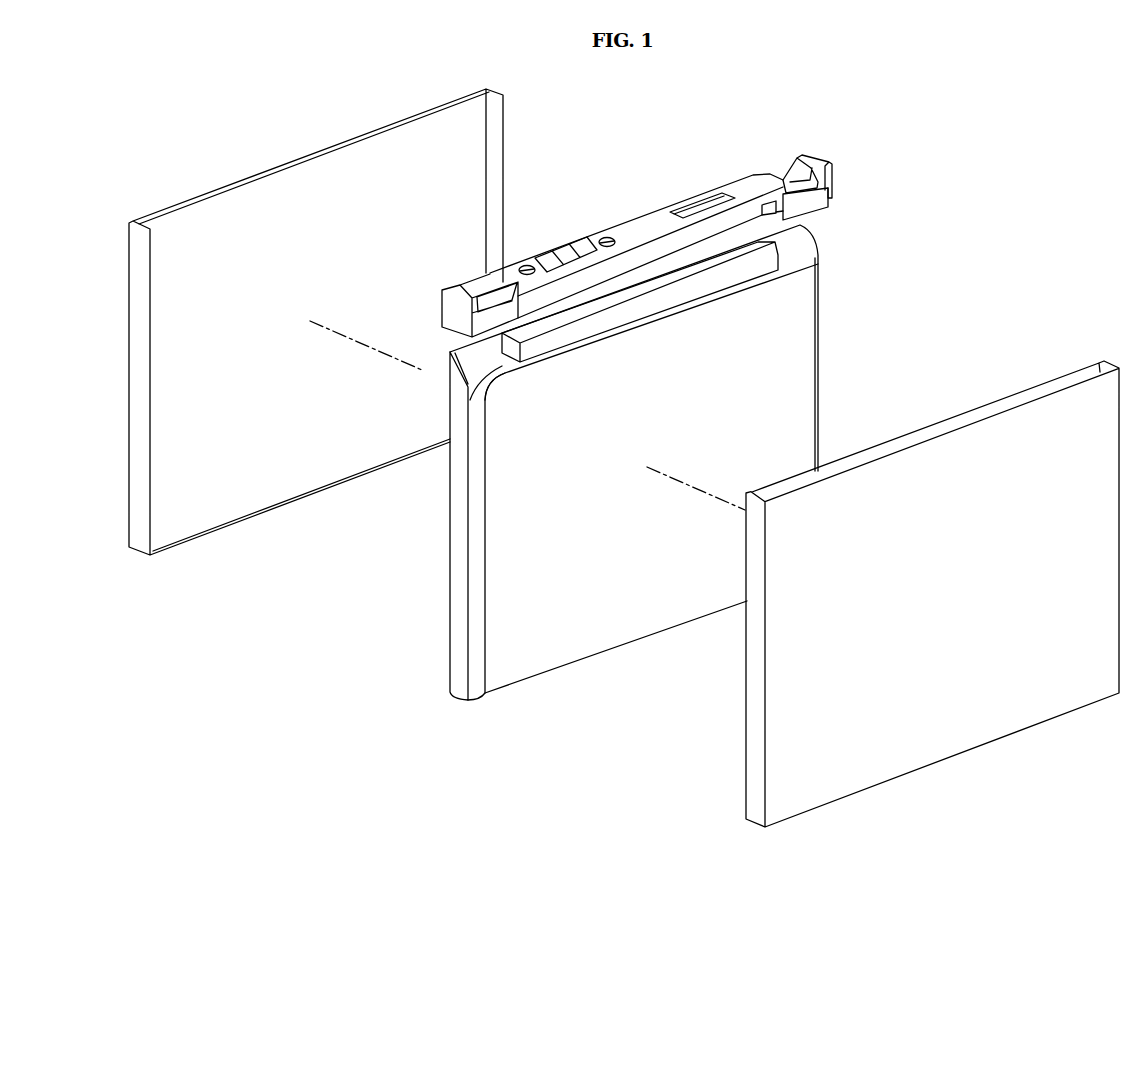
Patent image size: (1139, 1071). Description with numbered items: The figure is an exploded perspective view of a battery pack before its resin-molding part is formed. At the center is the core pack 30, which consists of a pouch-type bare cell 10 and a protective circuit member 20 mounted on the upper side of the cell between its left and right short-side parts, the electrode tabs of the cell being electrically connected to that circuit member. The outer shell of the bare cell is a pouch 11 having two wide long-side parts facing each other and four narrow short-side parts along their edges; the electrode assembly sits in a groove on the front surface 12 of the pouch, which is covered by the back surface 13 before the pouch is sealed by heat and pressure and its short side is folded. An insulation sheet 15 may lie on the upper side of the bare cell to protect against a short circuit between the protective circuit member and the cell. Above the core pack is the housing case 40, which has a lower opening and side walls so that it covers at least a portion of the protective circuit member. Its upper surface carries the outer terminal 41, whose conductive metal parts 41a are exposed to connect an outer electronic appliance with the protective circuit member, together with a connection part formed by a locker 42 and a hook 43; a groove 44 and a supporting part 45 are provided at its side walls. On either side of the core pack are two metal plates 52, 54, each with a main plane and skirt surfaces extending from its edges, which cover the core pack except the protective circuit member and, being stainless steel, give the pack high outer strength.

The pouch-type bare cell 10 is at (588, 462).
The pouch 11 is at (421, 528).
The front surface 12 is at (481, 547).
The back surface 13 is at (467, 508).
The insulation sheet 15 is at (475, 394).
The protective circuit member 20 is at (500, 352).
The core pack 30 is at (624, 458).
The housing case 40 is at (667, 226).
The outer terminal 41 is at (545, 238).
The metal part 41a is at (587, 248).
The locker 42 is at (787, 177).
The hook 43 is at (496, 296).
The groove 44 is at (667, 255).
The supporting part 45 is at (818, 203).
The metal plate 52 is at (954, 448).
The metal plate 54 is at (306, 174).